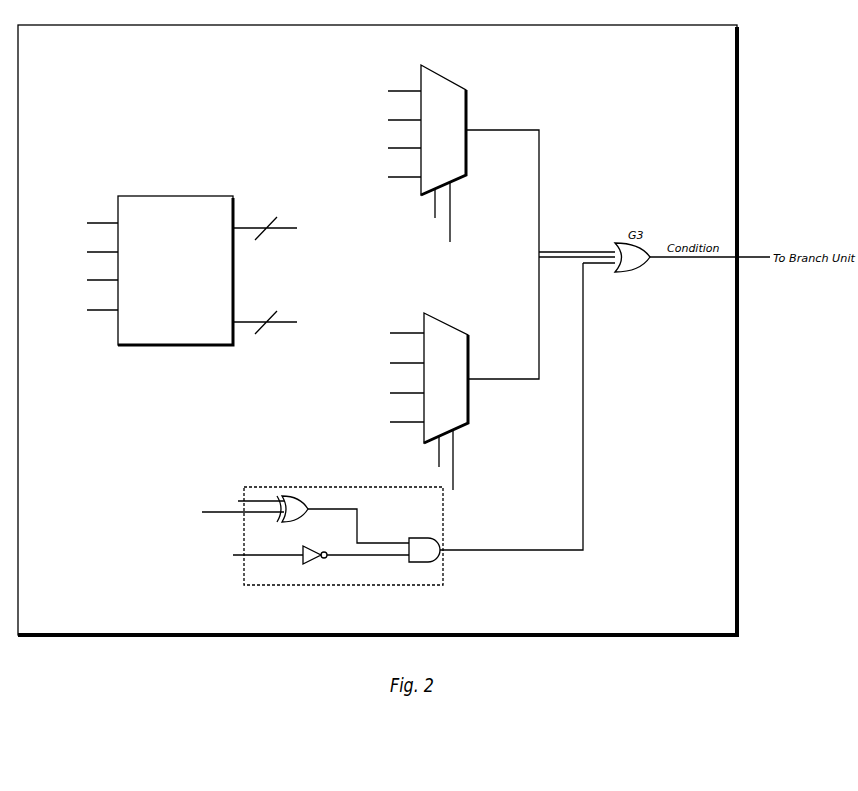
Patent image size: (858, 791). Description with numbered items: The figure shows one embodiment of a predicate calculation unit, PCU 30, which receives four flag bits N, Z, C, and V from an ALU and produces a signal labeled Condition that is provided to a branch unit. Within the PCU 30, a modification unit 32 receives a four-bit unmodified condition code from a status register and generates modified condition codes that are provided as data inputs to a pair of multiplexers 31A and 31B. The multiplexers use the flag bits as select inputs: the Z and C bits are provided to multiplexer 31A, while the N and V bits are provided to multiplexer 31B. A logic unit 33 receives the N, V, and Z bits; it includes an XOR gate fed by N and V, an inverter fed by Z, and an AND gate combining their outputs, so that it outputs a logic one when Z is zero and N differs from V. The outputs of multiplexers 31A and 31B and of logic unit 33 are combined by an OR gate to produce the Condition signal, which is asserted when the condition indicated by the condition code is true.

The predicate calculation unit 30 is at (377, 330).
The multiplexer 31A is at (440, 70).
The multiplexer 31B is at (442, 315).
The modification unit 32 is at (199, 270).
The logic unit 33 is at (408, 585).